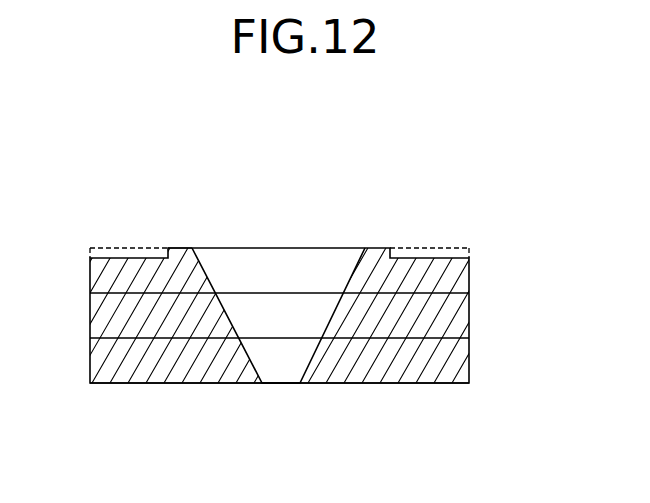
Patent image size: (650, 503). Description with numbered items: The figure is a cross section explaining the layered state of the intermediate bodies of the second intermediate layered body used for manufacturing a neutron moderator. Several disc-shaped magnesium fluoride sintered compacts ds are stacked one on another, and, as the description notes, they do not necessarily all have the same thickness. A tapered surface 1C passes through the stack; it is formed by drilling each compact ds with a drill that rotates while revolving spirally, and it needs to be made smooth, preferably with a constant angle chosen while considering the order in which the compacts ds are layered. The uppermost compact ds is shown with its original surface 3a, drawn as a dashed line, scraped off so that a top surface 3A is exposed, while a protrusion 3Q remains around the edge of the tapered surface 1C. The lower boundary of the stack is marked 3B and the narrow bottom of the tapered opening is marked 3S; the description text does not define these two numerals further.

The top surface 3A is at (100, 253).
The surface 3a is at (127, 247).
The protrusion 3Q is at (178, 248).
The tapered surface 1C is at (207, 272).
The disc-shaped magnesium fluoride sintered compact ds is at (447, 279).
The bottom surface of substrate 3B is at (193, 384).
The bottom of trench 3S is at (263, 374).